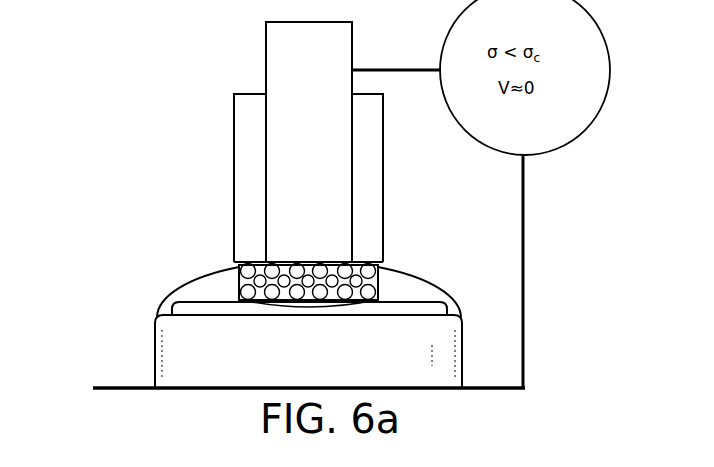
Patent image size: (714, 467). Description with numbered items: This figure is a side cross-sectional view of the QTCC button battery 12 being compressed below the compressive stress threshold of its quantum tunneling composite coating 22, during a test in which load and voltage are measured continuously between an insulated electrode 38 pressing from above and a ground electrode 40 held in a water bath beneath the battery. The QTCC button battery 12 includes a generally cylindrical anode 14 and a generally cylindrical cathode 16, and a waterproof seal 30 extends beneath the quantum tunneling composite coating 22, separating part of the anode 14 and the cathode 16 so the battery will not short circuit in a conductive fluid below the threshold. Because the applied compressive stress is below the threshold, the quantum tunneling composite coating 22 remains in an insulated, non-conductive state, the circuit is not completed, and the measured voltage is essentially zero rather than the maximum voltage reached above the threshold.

The QTCC button battery 12 is at (468, 268).
The anode 14 is at (173, 300).
The cathode 16 is at (155, 343).
The quantum tunneling composite coating 22 is at (238, 267).
The waterproof seal 30 is at (190, 284).
The insulated electrode 38 is at (300, 144).
The ground electrode 40 is at (120, 385).